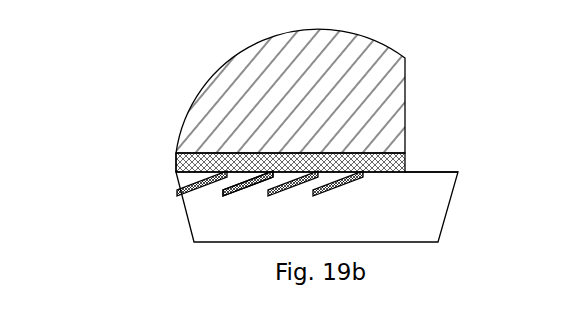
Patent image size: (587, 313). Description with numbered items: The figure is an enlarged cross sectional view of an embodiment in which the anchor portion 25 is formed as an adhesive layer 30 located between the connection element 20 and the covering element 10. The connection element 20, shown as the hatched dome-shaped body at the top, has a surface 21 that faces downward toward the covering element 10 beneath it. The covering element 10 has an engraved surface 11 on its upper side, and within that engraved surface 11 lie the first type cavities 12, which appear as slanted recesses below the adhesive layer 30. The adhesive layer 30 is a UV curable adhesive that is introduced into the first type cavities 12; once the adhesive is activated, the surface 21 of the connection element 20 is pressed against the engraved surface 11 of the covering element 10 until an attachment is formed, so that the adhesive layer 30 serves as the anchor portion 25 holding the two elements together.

The covering element 10 is at (362, 221).
The engraved surface 11 is at (433, 173).
The first type cavities 12 is at (188, 191).
The connection element 20 is at (344, 107).
The surface 21 is at (177, 167).
The anchor portion 25 is at (258, 183).
The adhesive layer 30 is at (352, 165).